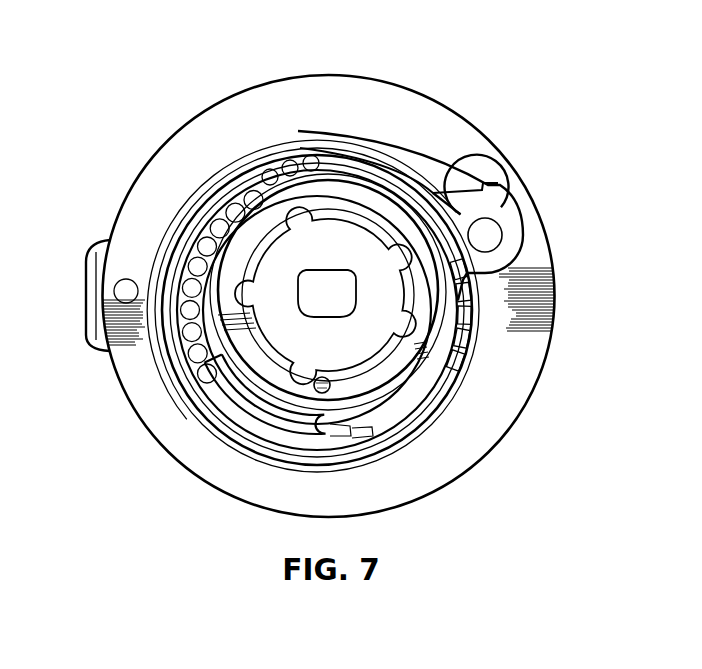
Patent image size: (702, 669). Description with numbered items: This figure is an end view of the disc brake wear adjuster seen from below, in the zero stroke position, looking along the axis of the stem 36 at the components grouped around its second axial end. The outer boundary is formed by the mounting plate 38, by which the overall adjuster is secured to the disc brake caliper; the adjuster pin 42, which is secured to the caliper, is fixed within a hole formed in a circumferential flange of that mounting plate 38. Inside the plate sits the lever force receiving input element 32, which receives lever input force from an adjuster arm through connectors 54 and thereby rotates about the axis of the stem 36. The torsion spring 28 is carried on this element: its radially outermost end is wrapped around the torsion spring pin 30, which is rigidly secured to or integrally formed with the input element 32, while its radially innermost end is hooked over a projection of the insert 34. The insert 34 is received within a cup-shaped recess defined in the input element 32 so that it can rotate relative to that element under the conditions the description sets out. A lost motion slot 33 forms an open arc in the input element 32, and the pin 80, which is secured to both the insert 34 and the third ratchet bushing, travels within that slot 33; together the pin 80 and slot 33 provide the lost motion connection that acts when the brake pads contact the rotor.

The mounting plate 38 is at (320, 75).
The adjuster pin 42 is at (126, 290).
The torsion spring 28 is at (177, 230).
The lost motion slot 33 is at (392, 368).
The stem 36 is at (325, 290).
The lever force receiving input element 32 is at (472, 193).
The torsion spring pin 30 is at (486, 235).
The insert 34 is at (300, 432).
The connectors 54 is at (180, 370).
The pin 80 is at (333, 386).